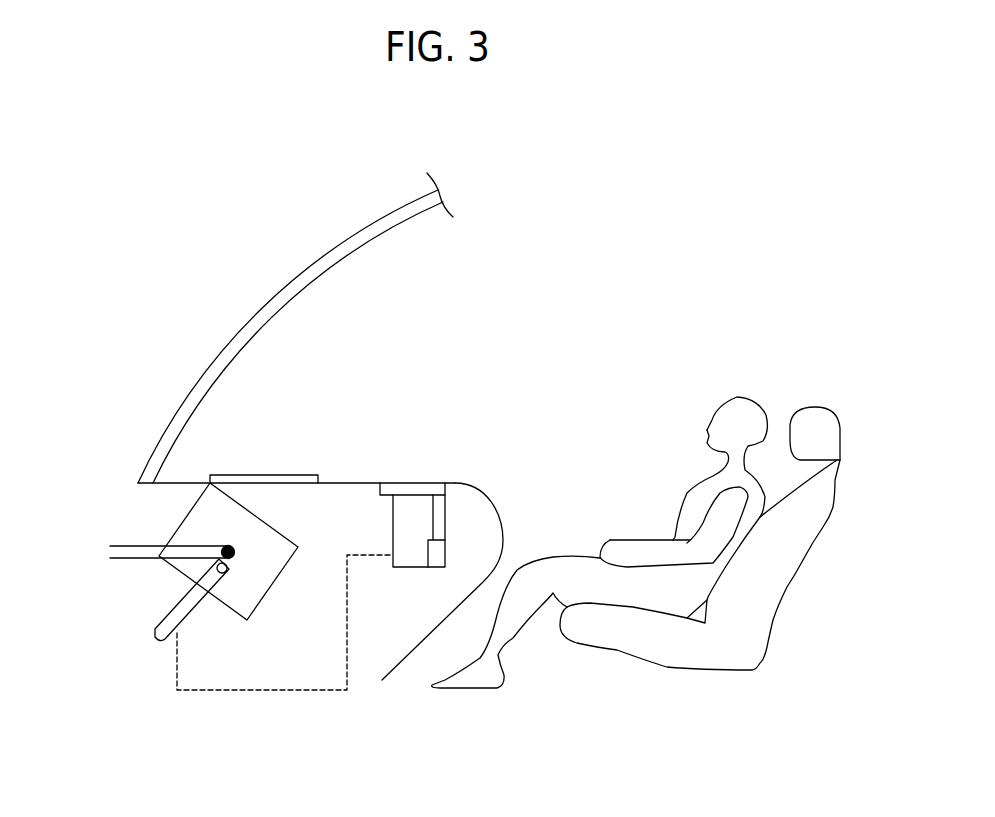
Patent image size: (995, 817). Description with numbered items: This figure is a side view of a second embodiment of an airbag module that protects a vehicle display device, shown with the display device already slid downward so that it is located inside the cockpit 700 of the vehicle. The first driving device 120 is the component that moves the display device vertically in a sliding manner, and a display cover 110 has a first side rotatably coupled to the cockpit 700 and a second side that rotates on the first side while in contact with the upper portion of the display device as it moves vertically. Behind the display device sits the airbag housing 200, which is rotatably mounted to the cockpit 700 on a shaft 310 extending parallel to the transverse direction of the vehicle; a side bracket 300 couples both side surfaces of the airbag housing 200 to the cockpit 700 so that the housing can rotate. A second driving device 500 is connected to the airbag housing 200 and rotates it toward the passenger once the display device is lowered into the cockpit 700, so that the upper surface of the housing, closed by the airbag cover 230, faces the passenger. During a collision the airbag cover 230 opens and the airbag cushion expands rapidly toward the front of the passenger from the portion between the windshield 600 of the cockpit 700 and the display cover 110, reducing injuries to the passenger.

The display cover 110 is at (408, 493).
The first driving device 120 is at (440, 517).
The airbag housing 200 is at (260, 607).
The airbag cover 230 is at (247, 474).
The side bracket 300 is at (130, 553).
The shaft 310 is at (226, 548).
The second driving device 500 is at (158, 643).
The windshield 600 is at (343, 247).
The cockpit 700 is at (463, 568).